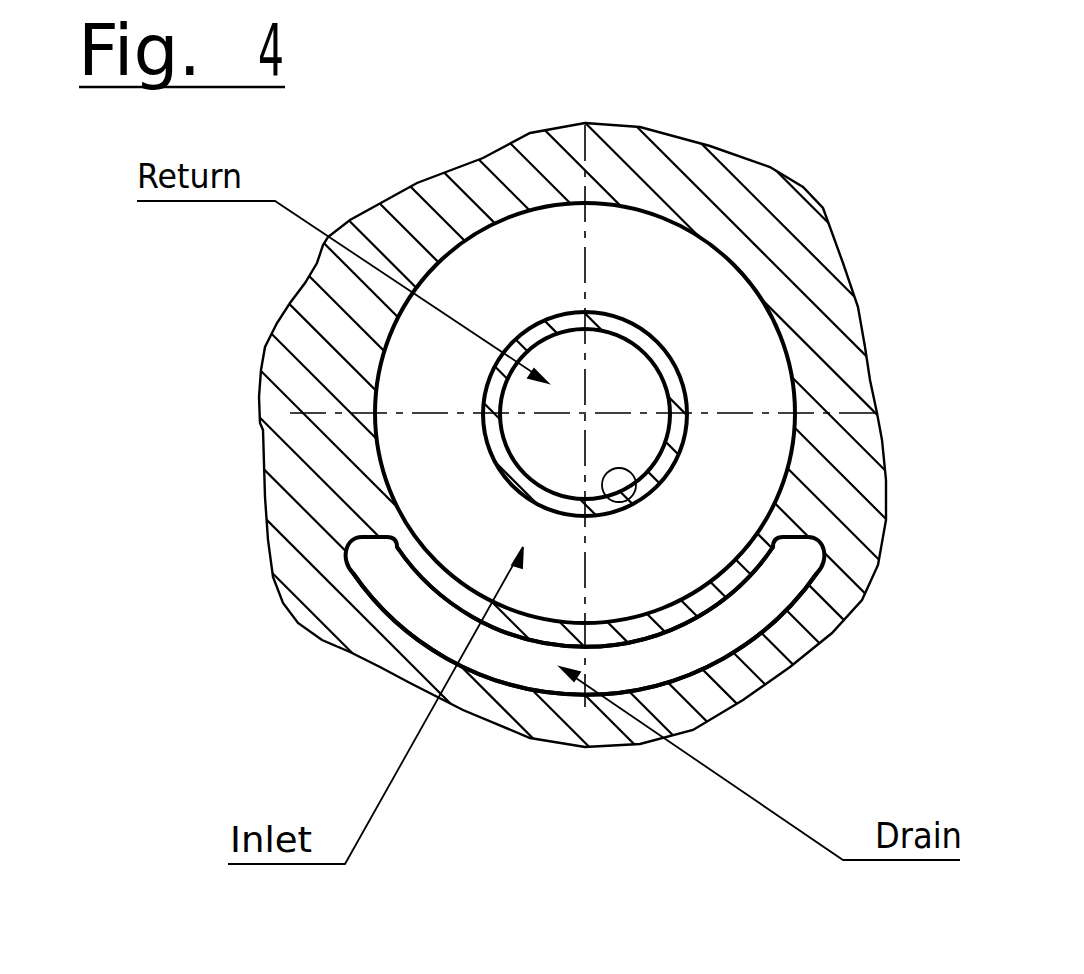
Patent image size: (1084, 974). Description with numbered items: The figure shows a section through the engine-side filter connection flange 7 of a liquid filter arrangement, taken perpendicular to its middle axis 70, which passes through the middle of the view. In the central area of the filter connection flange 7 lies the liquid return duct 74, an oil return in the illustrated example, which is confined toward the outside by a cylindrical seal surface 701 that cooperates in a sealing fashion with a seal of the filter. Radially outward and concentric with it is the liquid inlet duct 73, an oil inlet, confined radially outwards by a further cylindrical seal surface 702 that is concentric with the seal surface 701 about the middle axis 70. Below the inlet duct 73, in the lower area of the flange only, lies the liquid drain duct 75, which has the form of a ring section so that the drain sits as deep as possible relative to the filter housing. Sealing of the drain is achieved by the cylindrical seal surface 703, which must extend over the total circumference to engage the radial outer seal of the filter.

The filter connection flange 7 is at (195, 407).
The middle axis 70 is at (585, 414).
The inlet duct 73 is at (430, 494).
The return duct 74 is at (617, 447).
The drain duct 75 is at (412, 592).
The cylindrical seal surface 701 is at (632, 486).
The cylindrical seal surface 702 is at (633, 605).
The cylindrical seal surface 703 is at (653, 678).